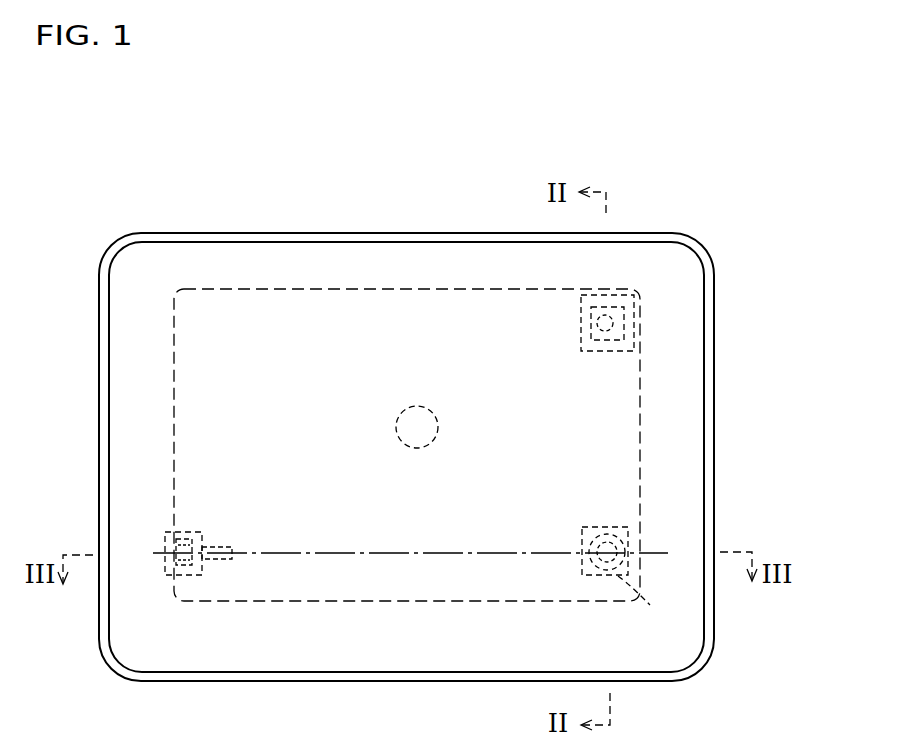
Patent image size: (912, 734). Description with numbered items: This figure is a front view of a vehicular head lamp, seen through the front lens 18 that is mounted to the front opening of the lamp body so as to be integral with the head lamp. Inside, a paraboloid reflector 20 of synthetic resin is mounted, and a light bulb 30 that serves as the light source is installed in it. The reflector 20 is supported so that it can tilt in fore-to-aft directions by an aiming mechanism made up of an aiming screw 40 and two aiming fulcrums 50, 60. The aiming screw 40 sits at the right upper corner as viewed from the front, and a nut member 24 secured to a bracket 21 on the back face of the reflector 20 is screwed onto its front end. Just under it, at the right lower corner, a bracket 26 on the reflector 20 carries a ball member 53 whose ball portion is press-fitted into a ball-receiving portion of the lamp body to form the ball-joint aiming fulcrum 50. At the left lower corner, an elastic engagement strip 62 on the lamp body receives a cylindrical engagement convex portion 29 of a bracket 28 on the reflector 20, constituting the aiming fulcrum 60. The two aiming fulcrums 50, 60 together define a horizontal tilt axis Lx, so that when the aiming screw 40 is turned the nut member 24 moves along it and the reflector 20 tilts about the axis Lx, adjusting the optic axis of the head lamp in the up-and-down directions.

The front lens 18 is at (497, 639).
The reflector 20 is at (498, 288).
The light bulb 30 is at (415, 403).
The horizontal tilt axis Lx is at (375, 554).
The nut member 24 is at (636, 300).
The bracket 21 is at (634, 344).
The aiming screw 40 is at (618, 322).
The bracket 26 is at (618, 526).
The aiming fulcrum 50 is at (616, 547).
The ball member 53 is at (618, 576).
The bracket 28 is at (202, 532).
The elastic engagement strip 62 is at (167, 531).
The engagement convex portion 29 is at (177, 548).
The aiming fulcrum 60 is at (183, 580).